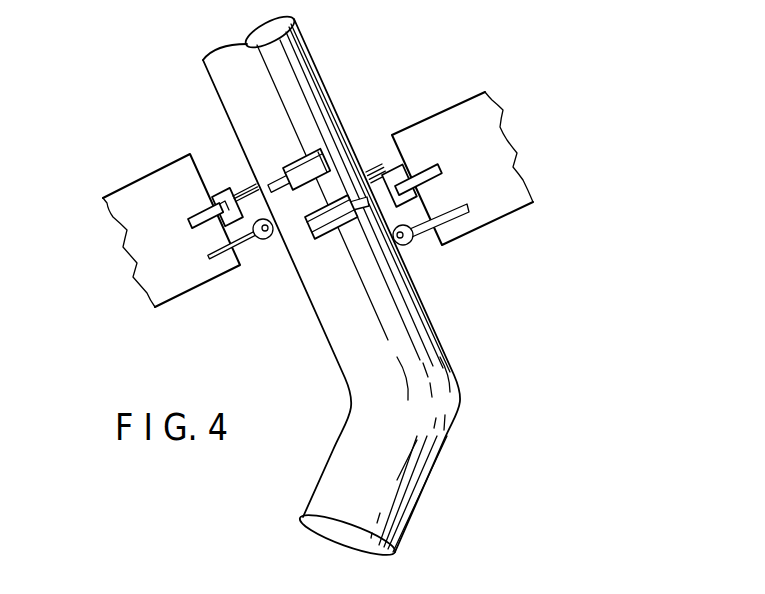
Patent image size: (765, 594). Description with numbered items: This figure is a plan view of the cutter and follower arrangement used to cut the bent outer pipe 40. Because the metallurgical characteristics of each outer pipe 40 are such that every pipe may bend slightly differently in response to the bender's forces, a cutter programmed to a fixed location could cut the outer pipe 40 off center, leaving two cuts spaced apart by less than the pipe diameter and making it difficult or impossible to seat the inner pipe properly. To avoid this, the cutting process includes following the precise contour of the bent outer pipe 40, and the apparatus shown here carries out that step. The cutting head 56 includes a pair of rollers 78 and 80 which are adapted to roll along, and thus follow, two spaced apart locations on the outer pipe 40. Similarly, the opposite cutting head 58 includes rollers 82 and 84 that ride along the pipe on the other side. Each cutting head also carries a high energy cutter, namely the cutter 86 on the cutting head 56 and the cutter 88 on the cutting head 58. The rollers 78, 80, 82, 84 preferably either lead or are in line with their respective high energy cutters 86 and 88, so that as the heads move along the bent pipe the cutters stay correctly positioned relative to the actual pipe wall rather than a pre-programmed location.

The outer pipe 40 is at (309, 58).
The cutting head 56 is at (140, 168).
The cutting head 58 is at (452, 99).
The roller 78 is at (263, 240).
The roller 80 is at (287, 167).
The roller 82 is at (415, 248).
The roller 84 is at (330, 212).
The high energy cutter 86 is at (232, 192).
The high energy cutter 88 is at (376, 188).